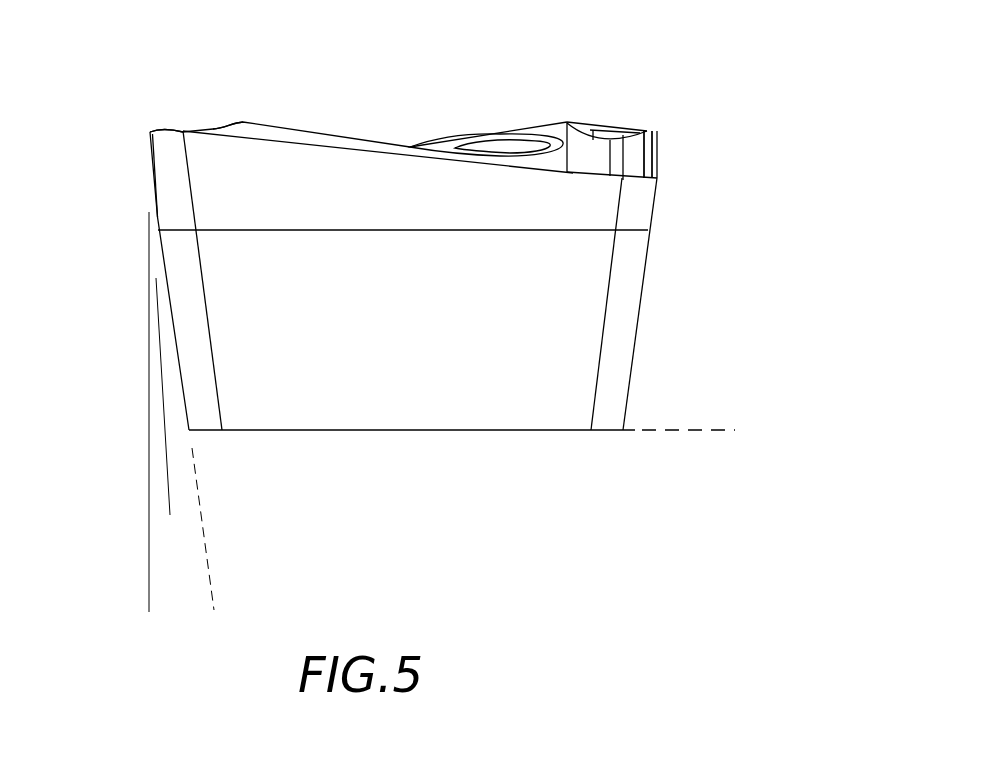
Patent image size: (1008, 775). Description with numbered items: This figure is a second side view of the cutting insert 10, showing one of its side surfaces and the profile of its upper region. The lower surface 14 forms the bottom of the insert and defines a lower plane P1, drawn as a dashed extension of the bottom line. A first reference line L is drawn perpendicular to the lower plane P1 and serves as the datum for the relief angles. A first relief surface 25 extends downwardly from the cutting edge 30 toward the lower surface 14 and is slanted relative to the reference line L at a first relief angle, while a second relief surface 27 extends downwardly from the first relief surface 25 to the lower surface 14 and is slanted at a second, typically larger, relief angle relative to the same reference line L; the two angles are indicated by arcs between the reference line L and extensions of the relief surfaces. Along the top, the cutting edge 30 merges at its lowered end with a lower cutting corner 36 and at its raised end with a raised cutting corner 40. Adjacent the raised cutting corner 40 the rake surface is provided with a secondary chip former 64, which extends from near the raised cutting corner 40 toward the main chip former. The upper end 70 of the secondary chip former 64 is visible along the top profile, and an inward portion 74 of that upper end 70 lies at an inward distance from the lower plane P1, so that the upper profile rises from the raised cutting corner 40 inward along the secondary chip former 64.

The cutting insert 10 is at (459, 248).
The lower surface 14 is at (407, 430).
The first relief surface 25 is at (138, 185).
The second relief surface 27 is at (167, 361).
The cutting edge 30 is at (658, 150).
The lower cutting corner 36 is at (657, 178).
The raised cutting corner 40 is at (150, 130).
The secondary chip former 64 is at (619, 107).
The upper end of the secondary chip former 70 is at (208, 102).
The inward portion of the upper end 74 is at (243, 122).
The lower plane P1 is at (673, 428).
The first reference line L is at (148, 598).